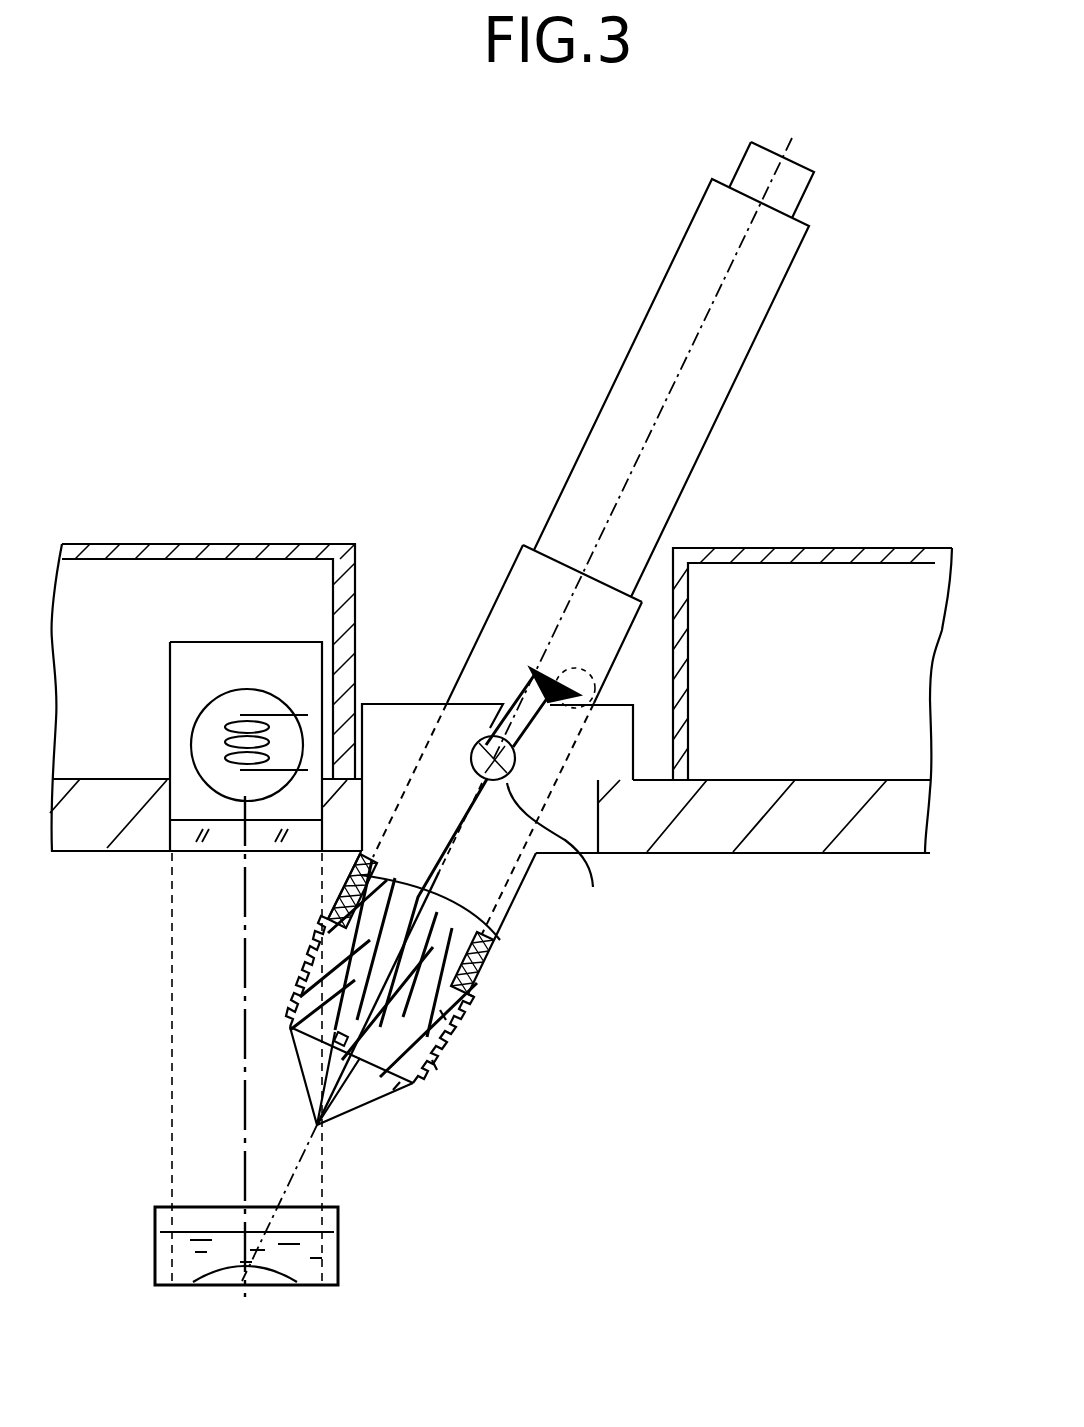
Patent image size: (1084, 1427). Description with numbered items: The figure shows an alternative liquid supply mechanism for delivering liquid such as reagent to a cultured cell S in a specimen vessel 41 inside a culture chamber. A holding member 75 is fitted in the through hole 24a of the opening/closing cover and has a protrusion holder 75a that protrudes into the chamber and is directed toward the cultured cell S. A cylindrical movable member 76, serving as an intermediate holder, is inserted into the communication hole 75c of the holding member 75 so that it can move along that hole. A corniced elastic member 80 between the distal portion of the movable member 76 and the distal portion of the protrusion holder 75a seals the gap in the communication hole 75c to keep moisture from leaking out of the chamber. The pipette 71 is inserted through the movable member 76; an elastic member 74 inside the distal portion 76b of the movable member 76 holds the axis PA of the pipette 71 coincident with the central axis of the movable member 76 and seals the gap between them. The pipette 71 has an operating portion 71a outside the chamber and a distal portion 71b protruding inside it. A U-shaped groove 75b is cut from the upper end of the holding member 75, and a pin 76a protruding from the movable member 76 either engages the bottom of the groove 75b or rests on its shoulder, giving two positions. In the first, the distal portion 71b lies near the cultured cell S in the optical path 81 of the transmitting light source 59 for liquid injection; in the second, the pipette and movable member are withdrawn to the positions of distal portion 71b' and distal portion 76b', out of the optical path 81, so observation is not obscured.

The through hole 24a is at (602, 823).
The specimen vessel 41 is at (340, 1246).
The cultured cell S is at (193, 1280).
The transmitting light source 59 is at (188, 815).
The pipette 71 is at (628, 375).
The operating portion 71a is at (787, 190).
The distal portion 71b is at (362, 1117).
The distal portion 71b' is at (477, 1105).
The elastic member 74 is at (392, 1055).
The holding member 75 is at (400, 722).
The protrusion holder 75a is at (495, 968).
The U-shaped groove 75b is at (513, 703).
The communication hole 75c is at (460, 965).
The movable member 76 is at (437, 1065).
The pin 76a is at (566, 851).
The distal portion 76b is at (463, 1164).
The distal portion 76b' is at (536, 1062).
The corniced elastic member 80 is at (463, 1013).
The optical path 81 is at (172, 1066).
The axis PA is at (700, 338).